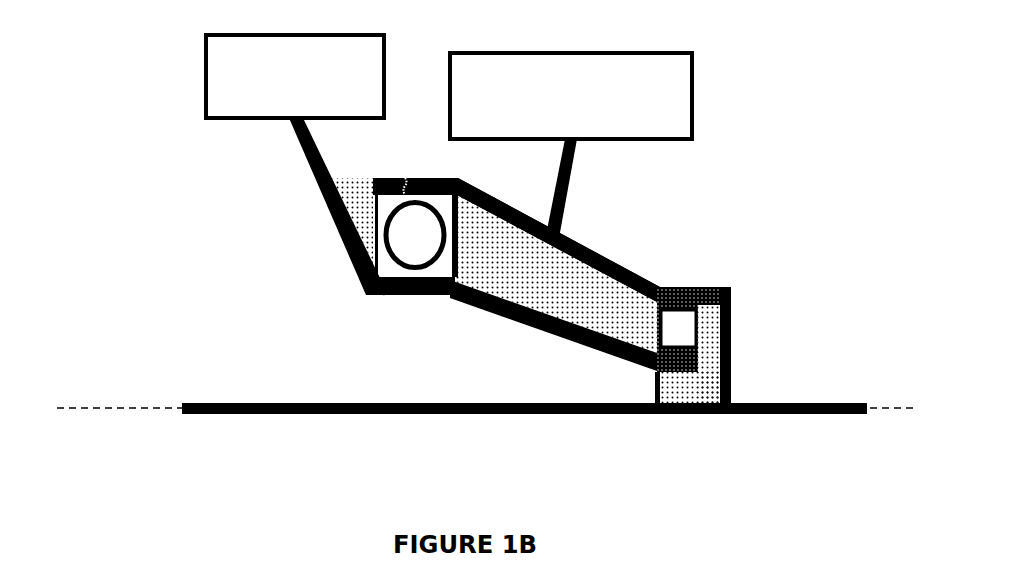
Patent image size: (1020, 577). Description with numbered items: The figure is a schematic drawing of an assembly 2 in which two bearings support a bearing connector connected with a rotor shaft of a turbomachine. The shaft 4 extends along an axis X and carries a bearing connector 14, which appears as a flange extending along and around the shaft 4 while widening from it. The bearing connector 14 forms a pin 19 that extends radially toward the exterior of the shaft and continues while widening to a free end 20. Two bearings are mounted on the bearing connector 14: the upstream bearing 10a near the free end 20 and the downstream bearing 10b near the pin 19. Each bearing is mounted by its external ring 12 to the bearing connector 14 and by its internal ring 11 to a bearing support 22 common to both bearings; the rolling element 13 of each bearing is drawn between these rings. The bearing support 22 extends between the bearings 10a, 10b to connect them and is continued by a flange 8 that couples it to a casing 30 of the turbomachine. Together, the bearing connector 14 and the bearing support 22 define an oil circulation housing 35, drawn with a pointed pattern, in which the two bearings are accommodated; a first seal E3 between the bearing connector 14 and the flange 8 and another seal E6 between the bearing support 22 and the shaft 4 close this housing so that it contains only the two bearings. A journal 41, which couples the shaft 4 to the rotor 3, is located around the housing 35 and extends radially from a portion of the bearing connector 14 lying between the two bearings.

The assembly 2 is at (200, 224).
The rotor 3 is at (561, 108).
The rotor shaft 4 is at (762, 415).
The flange 8 is at (328, 199).
The upstream bearing 10a is at (380, 228).
The downstream bearing 10b is at (656, 312).
The internal ring 11 is at (392, 298).
The external ring 12 is at (406, 178).
The housing 13 is at (380, 255).
The bearing connector 14 is at (617, 263).
The pin 19 is at (730, 325).
The free end 20 is at (483, 212).
The bearing support 22 is at (508, 318).
The casing 30 is at (282, 88).
The oil circulation housing 35 is at (546, 286).
The journal 41 is at (562, 200).
The first seal E3 is at (345, 178).
The seal E6 is at (657, 383).
The axis X is at (125, 408).